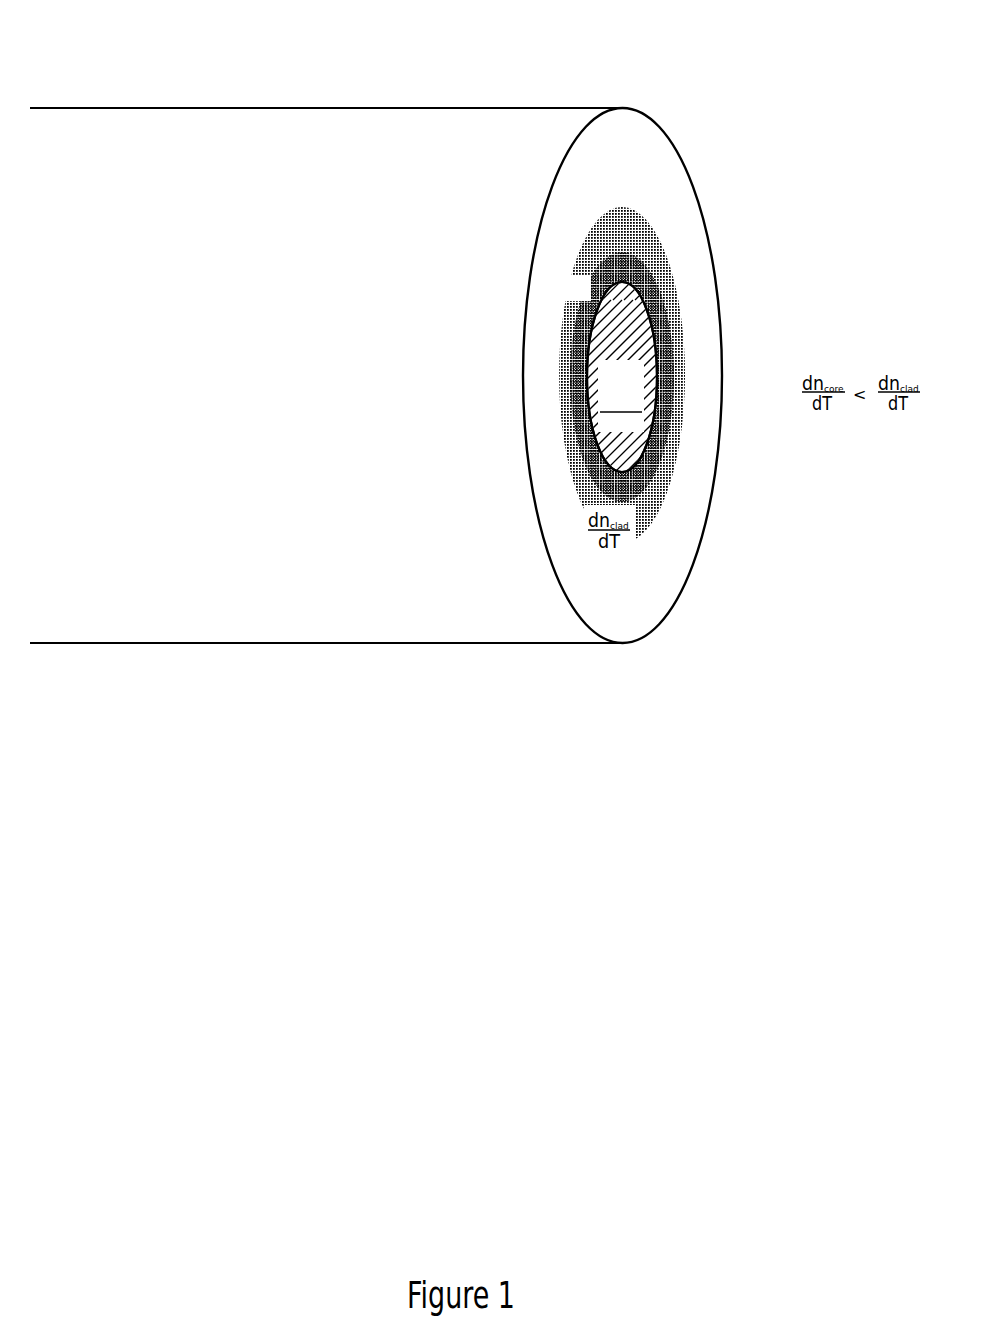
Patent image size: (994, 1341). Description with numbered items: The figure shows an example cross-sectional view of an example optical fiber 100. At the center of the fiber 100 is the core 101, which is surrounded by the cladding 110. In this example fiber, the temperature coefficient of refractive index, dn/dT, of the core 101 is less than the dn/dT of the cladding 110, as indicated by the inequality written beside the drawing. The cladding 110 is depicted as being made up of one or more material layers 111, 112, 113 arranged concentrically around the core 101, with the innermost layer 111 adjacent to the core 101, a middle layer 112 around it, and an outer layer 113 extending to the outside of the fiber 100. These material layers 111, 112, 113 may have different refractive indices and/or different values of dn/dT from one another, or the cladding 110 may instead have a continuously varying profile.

The fiber 100 is at (518, 58).
The core 101 is at (635, 379).
The cladding 110 is at (588, 298).
The material layer 111 is at (584, 413).
The material layer 112 is at (620, 220).
The material layer 113 is at (594, 152).